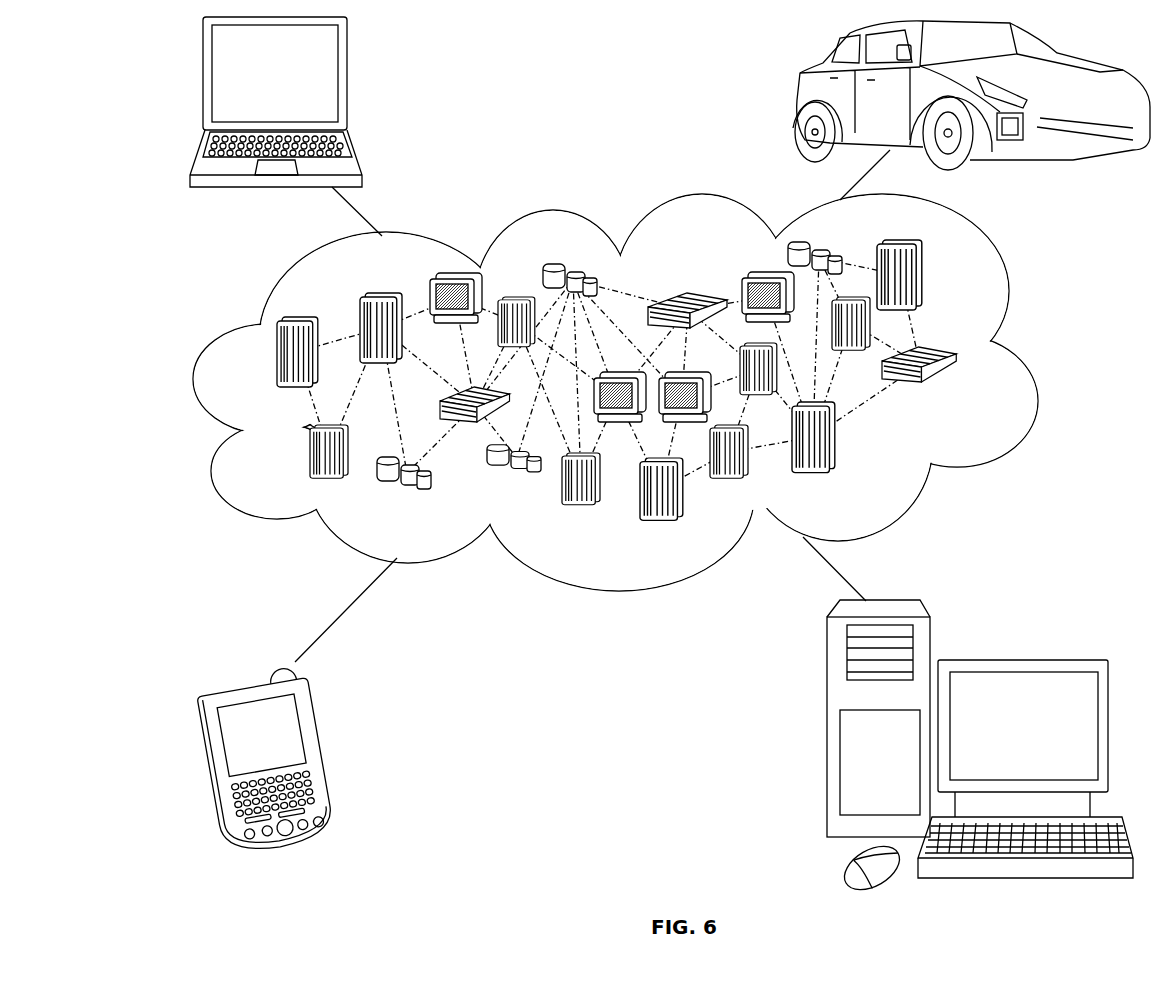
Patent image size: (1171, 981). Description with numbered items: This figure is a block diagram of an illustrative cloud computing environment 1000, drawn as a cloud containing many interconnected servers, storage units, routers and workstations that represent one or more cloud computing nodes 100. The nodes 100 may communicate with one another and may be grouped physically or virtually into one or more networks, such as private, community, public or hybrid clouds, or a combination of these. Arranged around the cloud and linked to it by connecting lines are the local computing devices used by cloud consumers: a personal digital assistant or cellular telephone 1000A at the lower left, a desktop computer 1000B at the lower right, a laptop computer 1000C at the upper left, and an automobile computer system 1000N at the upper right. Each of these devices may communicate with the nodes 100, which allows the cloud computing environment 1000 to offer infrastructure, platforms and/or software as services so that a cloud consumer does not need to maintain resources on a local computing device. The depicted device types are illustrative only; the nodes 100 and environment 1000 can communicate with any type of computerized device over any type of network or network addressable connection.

The laptop computer 1000C is at (347, 83).
The automobile computer system 1000N is at (797, 97).
The cloud computing environment 1000 is at (649, 406).
The cloud computing nodes 100 is at (974, 393).
The personal digital assistant (PDA) or cellular telephone 1000A is at (335, 757).
The desktop computer 1000B is at (1020, 660).